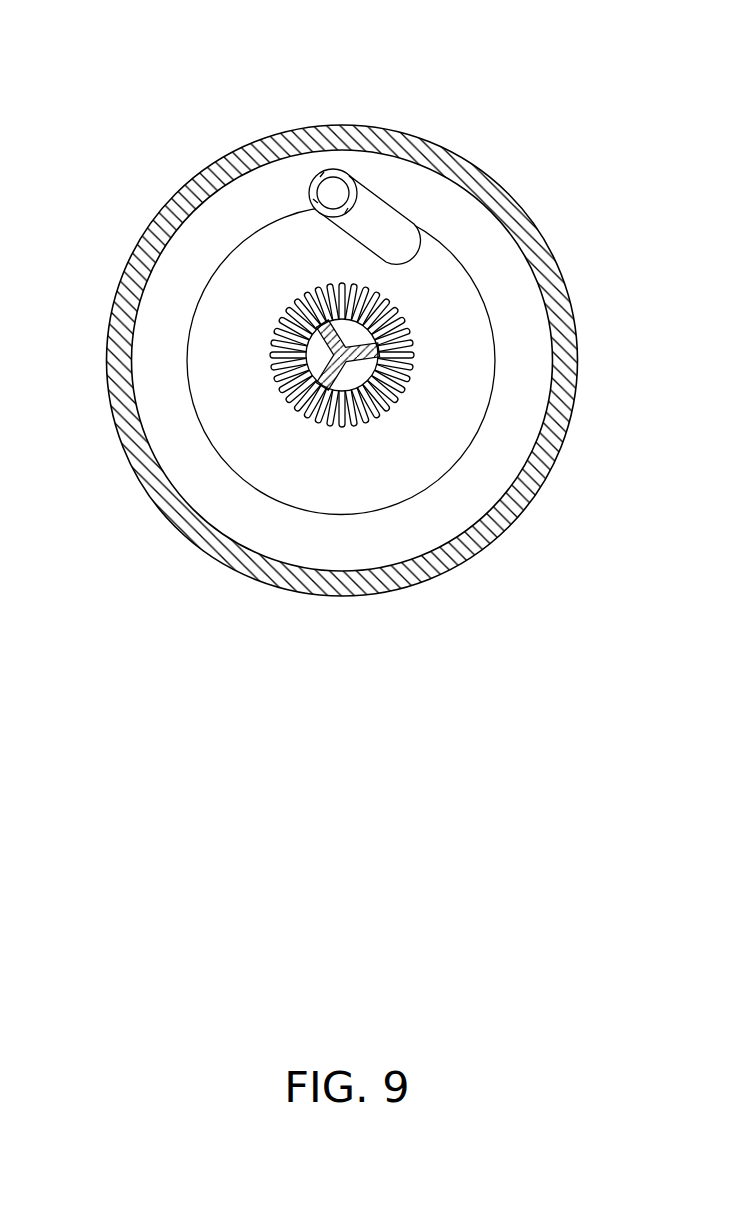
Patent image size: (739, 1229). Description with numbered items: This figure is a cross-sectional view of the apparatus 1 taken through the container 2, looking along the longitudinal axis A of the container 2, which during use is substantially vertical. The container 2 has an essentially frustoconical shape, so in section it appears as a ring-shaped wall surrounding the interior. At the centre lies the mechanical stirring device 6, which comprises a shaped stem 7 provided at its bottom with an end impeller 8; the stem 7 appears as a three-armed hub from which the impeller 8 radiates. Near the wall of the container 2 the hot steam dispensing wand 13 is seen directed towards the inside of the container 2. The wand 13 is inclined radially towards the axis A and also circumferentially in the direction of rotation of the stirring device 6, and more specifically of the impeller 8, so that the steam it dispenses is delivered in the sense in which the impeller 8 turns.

The apparatus 1 is at (503, 161).
The container 2 is at (147, 246).
The mechanical stirring device 6 is at (311, 274).
The shaped stem 7 is at (335, 372).
The end impeller 8 is at (365, 347).
The hot steam dispensing wand 13 is at (376, 213).
The longitudinal axis A is at (370, 432).